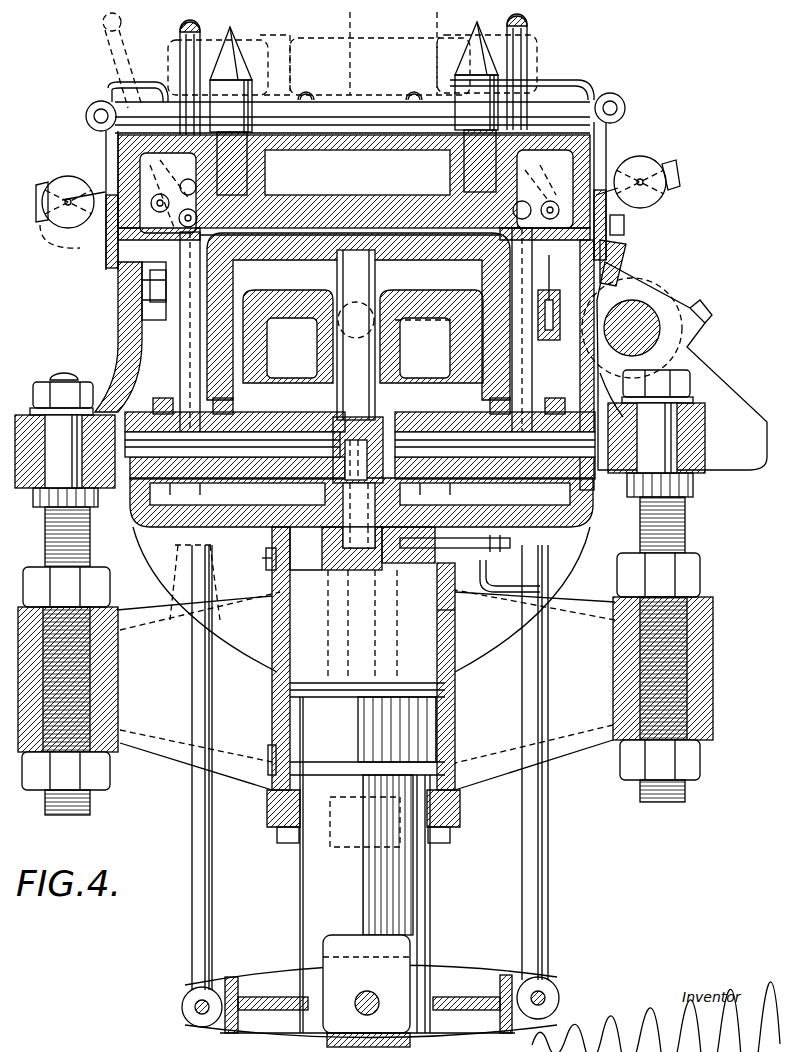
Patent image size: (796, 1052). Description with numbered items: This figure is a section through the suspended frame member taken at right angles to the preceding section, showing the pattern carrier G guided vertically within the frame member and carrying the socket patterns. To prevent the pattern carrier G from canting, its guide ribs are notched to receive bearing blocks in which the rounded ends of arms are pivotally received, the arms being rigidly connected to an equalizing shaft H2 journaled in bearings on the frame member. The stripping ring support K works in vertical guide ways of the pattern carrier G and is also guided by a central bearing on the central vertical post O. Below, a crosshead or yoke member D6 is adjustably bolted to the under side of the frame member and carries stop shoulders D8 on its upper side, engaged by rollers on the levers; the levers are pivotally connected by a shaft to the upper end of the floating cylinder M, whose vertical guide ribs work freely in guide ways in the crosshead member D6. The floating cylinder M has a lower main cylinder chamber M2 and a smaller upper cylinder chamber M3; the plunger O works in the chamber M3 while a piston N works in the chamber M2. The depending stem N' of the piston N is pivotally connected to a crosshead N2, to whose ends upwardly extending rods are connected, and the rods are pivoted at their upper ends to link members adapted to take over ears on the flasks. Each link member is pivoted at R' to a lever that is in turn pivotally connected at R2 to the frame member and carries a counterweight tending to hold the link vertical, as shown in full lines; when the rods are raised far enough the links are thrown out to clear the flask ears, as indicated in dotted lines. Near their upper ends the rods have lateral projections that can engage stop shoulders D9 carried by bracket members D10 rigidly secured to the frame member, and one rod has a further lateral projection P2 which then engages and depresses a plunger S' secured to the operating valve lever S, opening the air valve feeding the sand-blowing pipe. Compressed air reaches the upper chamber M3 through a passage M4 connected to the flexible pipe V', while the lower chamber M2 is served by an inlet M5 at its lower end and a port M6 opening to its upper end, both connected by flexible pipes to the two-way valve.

The link pivot R' is at (356, 195).
The lever pivot R2 is at (625, 223).
The lateral projection P2 is at (596, 250).
The stop shoulders D9 is at (178, 335).
The bracket members D10 is at (128, 306).
The pattern carrier G is at (233, 278).
The stripping ring support K is at (418, 300).
The central vertical post O is at (356, 335).
The operating valve lever S is at (549, 321).
The plunger S' is at (634, 263).
The equalizing shaft H2 is at (655, 305).
The upper cylinder chamber M3 is at (358, 482).
The stop shoulder D8 is at (186, 546).
The port M6 is at (268, 556).
The flexible pipe V' is at (483, 563).
The floating cylinder M is at (273, 680).
The lower main cylinder chamber M2 is at (273, 632).
The passage M4 is at (455, 600).
The inlet M5 is at (273, 750).
The crosshead or yoke member D6 is at (366, 690).
The piston N is at (367, 858).
The piston stem N' is at (381, 855).
The crosshead N2 is at (470, 975).